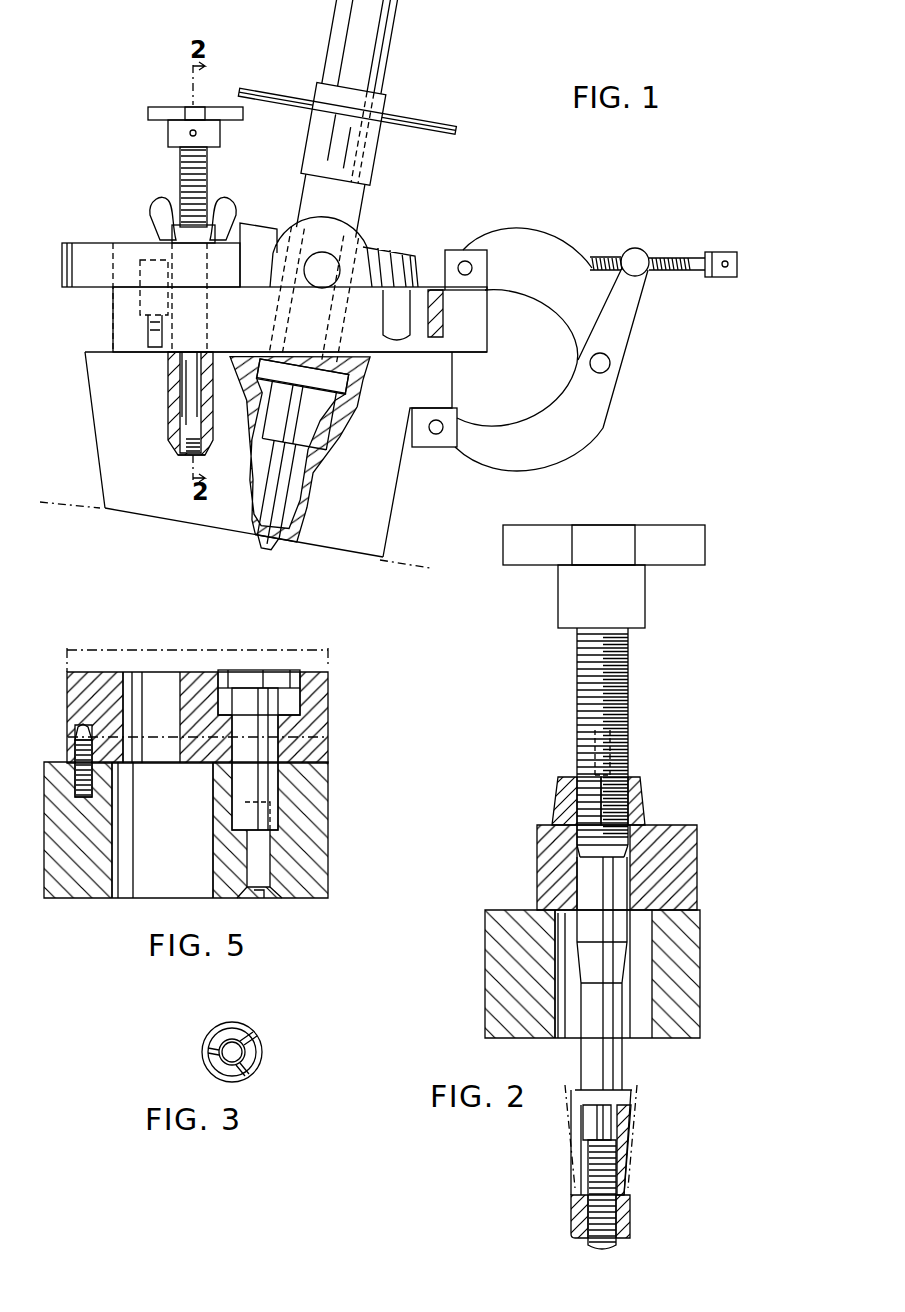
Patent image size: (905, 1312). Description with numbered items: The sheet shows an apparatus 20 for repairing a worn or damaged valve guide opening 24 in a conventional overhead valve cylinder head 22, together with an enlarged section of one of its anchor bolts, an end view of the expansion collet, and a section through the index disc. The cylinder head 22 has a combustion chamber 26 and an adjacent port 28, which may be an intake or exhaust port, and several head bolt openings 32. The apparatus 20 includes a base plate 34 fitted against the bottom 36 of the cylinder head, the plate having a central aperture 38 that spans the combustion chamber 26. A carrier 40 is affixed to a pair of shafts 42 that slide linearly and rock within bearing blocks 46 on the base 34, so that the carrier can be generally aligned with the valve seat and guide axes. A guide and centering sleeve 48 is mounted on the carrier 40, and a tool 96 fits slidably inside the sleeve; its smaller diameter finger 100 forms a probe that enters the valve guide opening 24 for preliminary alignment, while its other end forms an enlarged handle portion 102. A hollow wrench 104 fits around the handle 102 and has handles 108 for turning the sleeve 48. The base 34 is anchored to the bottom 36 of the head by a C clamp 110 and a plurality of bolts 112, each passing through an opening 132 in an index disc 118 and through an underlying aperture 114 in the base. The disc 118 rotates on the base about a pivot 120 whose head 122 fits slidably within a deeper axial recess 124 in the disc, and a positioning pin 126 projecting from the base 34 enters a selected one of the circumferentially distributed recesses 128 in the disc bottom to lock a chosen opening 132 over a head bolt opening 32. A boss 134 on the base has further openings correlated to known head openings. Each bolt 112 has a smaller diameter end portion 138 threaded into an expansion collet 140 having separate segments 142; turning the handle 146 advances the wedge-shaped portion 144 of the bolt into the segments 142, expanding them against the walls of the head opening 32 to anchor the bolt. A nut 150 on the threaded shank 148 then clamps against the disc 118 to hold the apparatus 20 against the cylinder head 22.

In FIG. 1, the apparatus 20 is at (613, 182).
In FIG. 1, the cylinder head 22 is at (390, 505).
In FIG. 1, the valve guide opening 24 is at (250, 531).
In FIG. 1, the combustion chamber 26 is at (360, 377).
In FIG. 1, the port 28 is at (326, 429).
In FIG. 1, the head bolt openings 32 is at (188, 458).
In FIG. 1, the base plate 34 is at (487, 346).
In FIG. 5, the base plate 34 is at (326, 841).
In FIG. 2, the base plate 34 is at (700, 1013).
In FIG. 1, the bottom of the cylinder head 36 is at (95, 352).
In FIG. 1, the central aperture 38 is at (442, 321).
In FIG. 1, the carrier 40 is at (412, 253).
In FIG. 1, the shafts 42 is at (322, 270).
In FIG. 1, the bearing blocks 46 is at (278, 253).
In FIG. 1, the guide and centering sleeve 48 is at (377, 263).
In FIG. 1, the tool 96 is at (268, 421).
In FIG. 1, the finger 100 is at (292, 523).
In FIG. 1, the handle portion 102 is at (386, 51).
In FIG. 1, the hollow wrench 104 is at (370, 203).
In FIG. 1, the handles 108 is at (272, 90).
In FIG. 1, the C clamp 110 is at (600, 427).
In FIG. 1, the anchor bolt 112 is at (189, 207).
In FIG. 2, the anchor bolt 112 is at (645, 685).
In FIG. 5, the aperture 114 is at (145, 891).
In FIG. 2, the aperture 114 is at (637, 1041).
In FIG. 1, the disc 118 is at (63, 271).
In FIG. 5, the disc 118 is at (190, 672).
In FIG. 2, the disc 118 is at (688, 869).
In FIG. 5, the pivot 120 is at (280, 797).
In FIG. 5, the head 122 is at (277, 672).
In FIG. 5, the axial recess 124 is at (300, 701).
In FIG. 5, the positioning pin 126 is at (84, 793).
In FIG. 5, the recesses 128 is at (78, 734).
In FIG. 5, the openings 132 is at (123, 687).
In FIG. 2, the openings 132 is at (577, 849).
In FIG. 1, the boss 134 is at (112, 263).
In FIG. 1, the end portion 138 is at (184, 442).
In FIG. 2, the end portion 138 is at (605, 1224).
In FIG. 1, the expansion collet 140 is at (182, 422).
In FIG. 3, the expansion collet 140 is at (262, 1068).
In FIG. 2, the expansion collet 140 is at (632, 1206).
In FIG. 2, the segments 142 is at (628, 1123).
In FIG. 2, the wedge-shaped portion 144 is at (585, 1094).
In FIG. 1, the handle 146 is at (162, 107).
In FIG. 2, the handle 146 is at (705, 547).
In FIG. 1, the shank 148 is at (180, 179).
In FIG. 2, the shank 148 is at (580, 689).
In FIG. 1, the nut 150 is at (228, 209).
In FIG. 2, the nut 150 is at (648, 798).